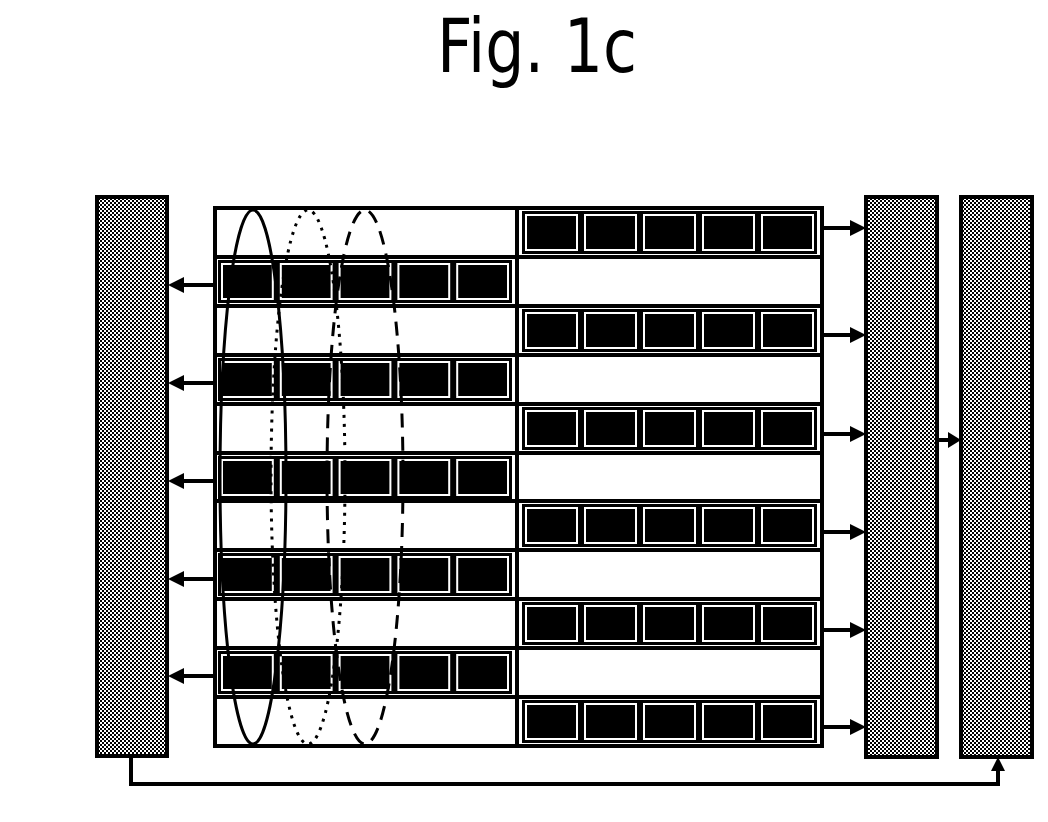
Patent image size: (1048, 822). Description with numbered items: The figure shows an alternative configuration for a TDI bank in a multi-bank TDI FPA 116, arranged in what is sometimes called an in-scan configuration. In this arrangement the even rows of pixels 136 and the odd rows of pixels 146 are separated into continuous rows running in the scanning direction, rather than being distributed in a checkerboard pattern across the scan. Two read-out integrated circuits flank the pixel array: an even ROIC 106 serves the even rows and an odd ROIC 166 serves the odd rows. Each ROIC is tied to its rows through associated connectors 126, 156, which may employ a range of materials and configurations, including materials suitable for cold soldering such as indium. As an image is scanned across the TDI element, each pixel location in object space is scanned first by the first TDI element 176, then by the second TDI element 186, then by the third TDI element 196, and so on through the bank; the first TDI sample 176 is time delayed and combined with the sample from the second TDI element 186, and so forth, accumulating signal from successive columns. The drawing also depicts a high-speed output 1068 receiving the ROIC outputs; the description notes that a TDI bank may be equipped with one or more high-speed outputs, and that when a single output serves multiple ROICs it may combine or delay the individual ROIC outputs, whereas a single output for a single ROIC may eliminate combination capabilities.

The even ROIC 106 is at (115, 200).
The multi-bank TDI FPA 116 is at (506, 415).
The connectors 126 is at (188, 280).
The even rows of pixels 136 is at (656, 207).
The odd rows of pixels 146 is at (572, 230).
The connectors 156 is at (850, 222).
The odd ROIC 166 is at (893, 197).
The TDI-1 176 is at (260, 208).
The TDI-2 186 is at (317, 208).
The TDI-3 196 is at (367, 208).
The high-speed output 1068 is at (1016, 197).